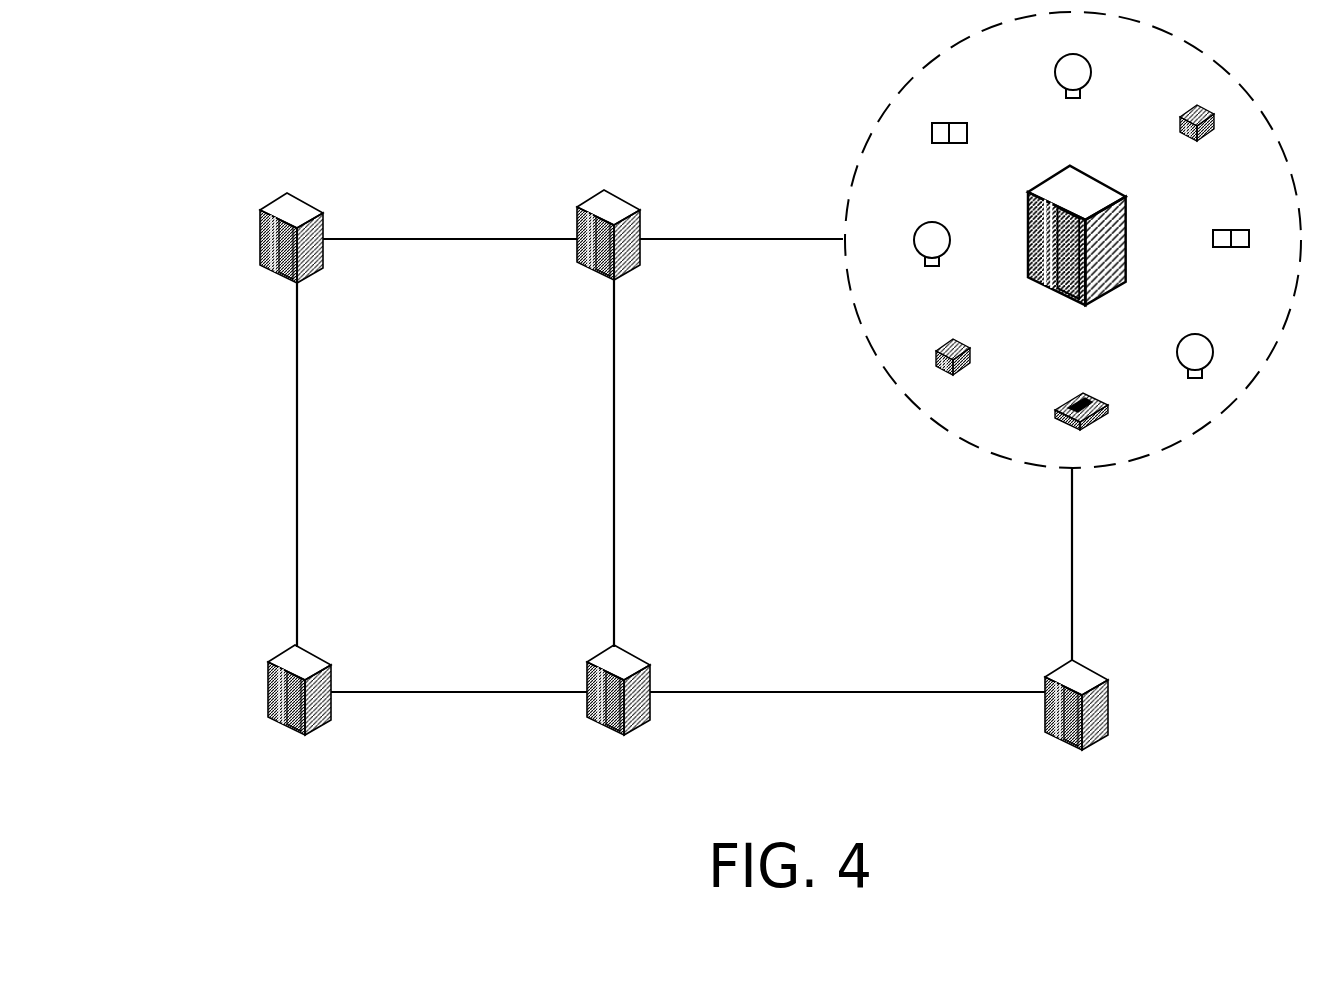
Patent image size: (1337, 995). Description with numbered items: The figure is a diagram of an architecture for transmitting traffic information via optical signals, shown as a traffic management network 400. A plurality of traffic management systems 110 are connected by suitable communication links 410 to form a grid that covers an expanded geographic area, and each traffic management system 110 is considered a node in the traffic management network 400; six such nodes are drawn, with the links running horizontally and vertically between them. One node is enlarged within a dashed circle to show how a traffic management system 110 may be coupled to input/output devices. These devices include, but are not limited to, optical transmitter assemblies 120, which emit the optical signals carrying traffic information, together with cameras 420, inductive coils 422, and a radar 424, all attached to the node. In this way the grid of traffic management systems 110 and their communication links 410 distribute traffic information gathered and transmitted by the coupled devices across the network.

The traffic management network 400 is at (331, 117).
The communication links 410 is at (455, 239).
The traffic management system 110 is at (323, 268).
The optical transmitter assemblies 120 is at (1068, 56).
The cameras 420 is at (948, 338).
The inductive coils 422 is at (946, 123).
The radar 424 is at (1057, 415).